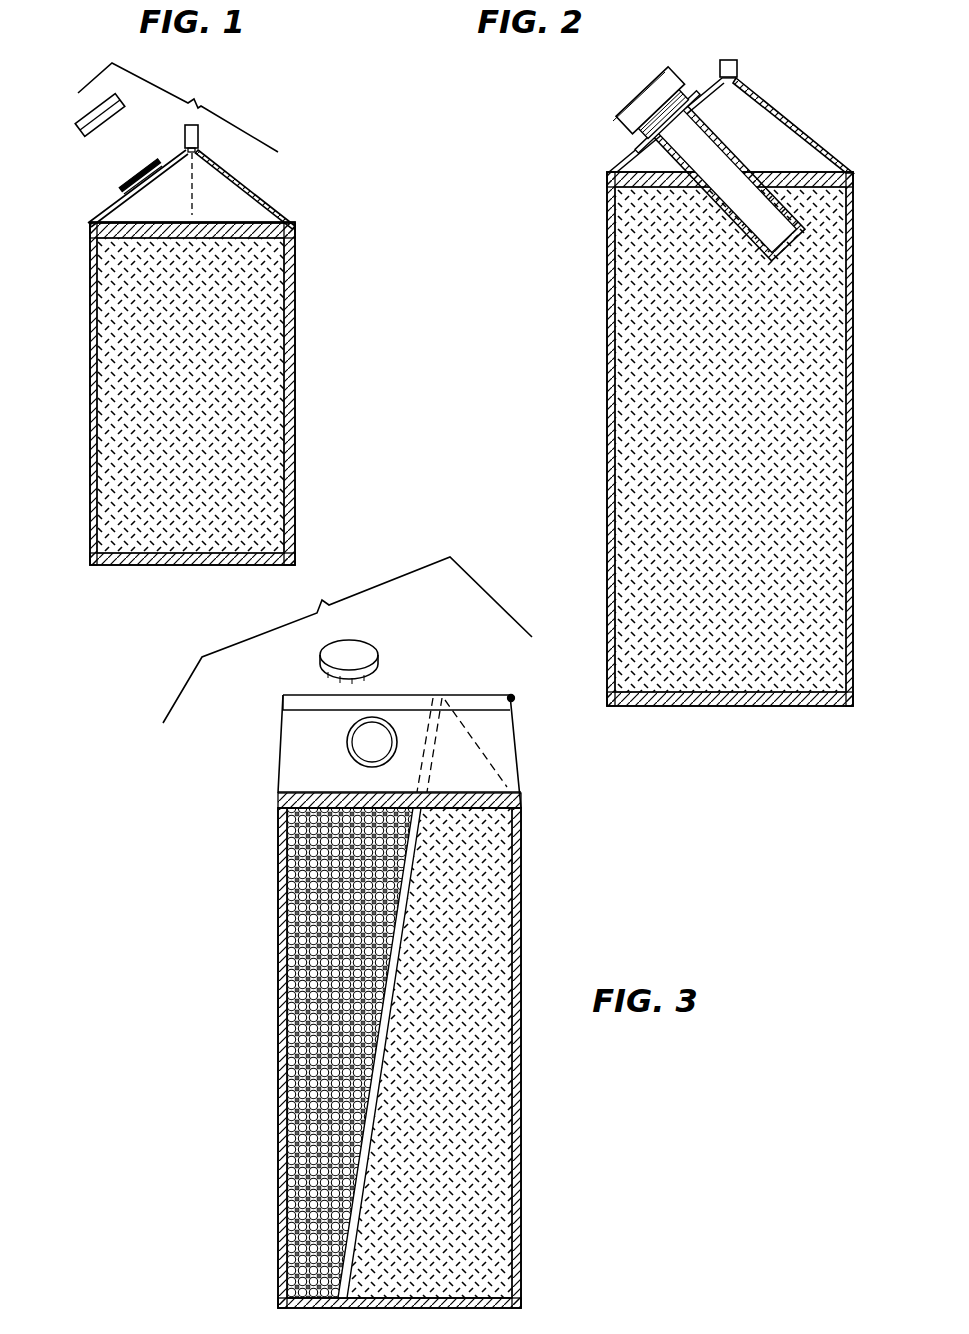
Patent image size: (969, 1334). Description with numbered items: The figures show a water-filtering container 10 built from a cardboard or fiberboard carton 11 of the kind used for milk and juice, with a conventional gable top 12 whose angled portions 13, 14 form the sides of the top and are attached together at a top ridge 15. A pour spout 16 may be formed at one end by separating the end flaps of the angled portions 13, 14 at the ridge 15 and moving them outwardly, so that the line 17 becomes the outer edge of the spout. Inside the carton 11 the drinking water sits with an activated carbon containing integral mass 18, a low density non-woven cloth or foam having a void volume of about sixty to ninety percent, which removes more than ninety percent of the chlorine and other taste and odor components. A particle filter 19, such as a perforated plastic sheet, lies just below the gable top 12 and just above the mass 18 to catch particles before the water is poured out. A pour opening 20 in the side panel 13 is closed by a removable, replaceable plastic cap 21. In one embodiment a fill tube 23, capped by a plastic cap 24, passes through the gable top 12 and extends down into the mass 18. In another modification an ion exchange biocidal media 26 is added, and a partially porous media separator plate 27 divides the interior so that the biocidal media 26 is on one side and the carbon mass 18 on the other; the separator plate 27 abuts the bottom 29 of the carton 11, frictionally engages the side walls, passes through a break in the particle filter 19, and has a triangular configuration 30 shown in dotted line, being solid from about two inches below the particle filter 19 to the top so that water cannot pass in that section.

In FIG. 1, the container 10 is at (283, 104).
In FIG. 1, the carton 11 is at (91, 345).
In FIG. 2, the carton 11 is at (606, 300).
In FIG. 3, the carton 11 is at (278, 1020).
In FIG. 1, the gable top 12 is at (172, 149).
In FIG. 2, the gable top 12 is at (568, 118).
In FIG. 3, the gable top 12 is at (268, 735).
In FIG. 1, the angled portion 13 is at (104, 212).
In FIG. 2, the angled portion 13 is at (710, 78).
In FIG. 3, the angled portion 13 is at (293, 763).
In FIG. 1, the angled portion 14 is at (236, 180).
In FIG. 2, the angled portion 14 is at (792, 118).
In FIG. 1, the top ridge 15 is at (199, 140).
In FIG. 2, the top ridge 15 is at (738, 72).
In FIG. 3, the top ridge 15 is at (408, 706).
In FIG. 1, the pour spout 16 is at (232, 206).
In FIG. 3, the pour spout 16 is at (514, 697).
In FIG. 1, the line 17 is at (192, 191).
In FIG. 3, the line 17 is at (492, 758).
In FIG. 1, the activated carbon containing integral mass 18 is at (266, 291).
In FIG. 2, the activated carbon containing integral mass 18 is at (818, 380).
In FIG. 3, the activated carbon containing integral mass 18 is at (475, 1107).
In FIG. 1, the particle filter 19 is at (98, 228).
In FIG. 2, the particle filter 19 is at (832, 176).
In FIG. 3, the particle filter 19 is at (280, 806).
In FIG. 1, the pour opening 20 is at (137, 177).
In FIG. 2, the pour opening 20 is at (687, 100).
In FIG. 3, the pour opening 20 is at (368, 745).
In FIG. 1, the plastic cap 21 is at (78, 126).
In FIG. 2, the plastic cap 21 is at (663, 114).
In FIG. 3, the plastic cap 21 is at (345, 645).
In FIG. 2, the fill tube 23 is at (759, 176).
In FIG. 2, the plastic cap 24 is at (648, 82).
In FIG. 3, the ion exchange biocidal media 26 is at (312, 1083).
In FIG. 3, the media separator plate 27 is at (392, 875).
In FIG. 3, the bottom 29 is at (362, 1308).
In FIG. 3, the triangular configuration 30 is at (447, 750).